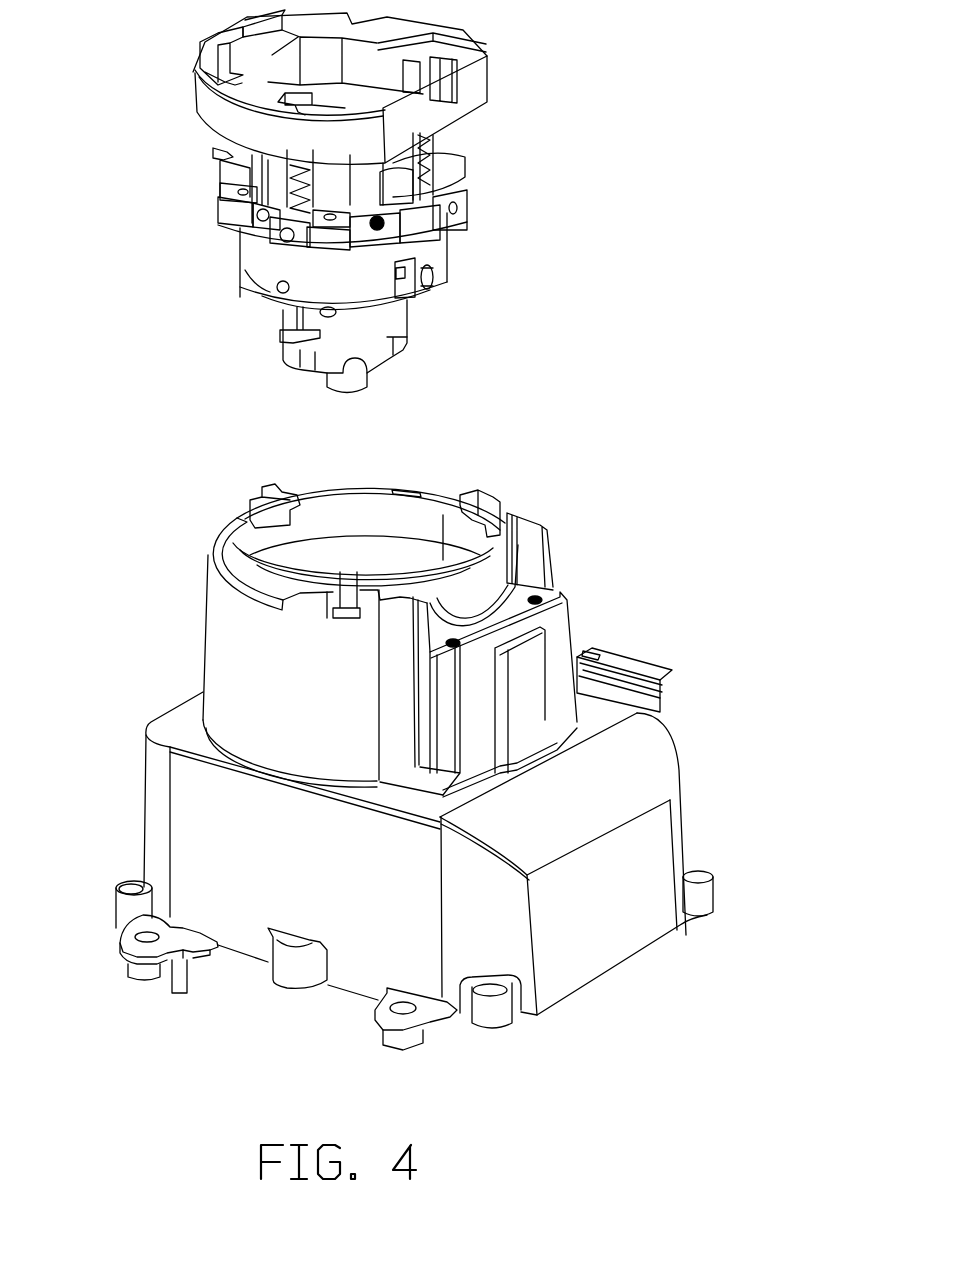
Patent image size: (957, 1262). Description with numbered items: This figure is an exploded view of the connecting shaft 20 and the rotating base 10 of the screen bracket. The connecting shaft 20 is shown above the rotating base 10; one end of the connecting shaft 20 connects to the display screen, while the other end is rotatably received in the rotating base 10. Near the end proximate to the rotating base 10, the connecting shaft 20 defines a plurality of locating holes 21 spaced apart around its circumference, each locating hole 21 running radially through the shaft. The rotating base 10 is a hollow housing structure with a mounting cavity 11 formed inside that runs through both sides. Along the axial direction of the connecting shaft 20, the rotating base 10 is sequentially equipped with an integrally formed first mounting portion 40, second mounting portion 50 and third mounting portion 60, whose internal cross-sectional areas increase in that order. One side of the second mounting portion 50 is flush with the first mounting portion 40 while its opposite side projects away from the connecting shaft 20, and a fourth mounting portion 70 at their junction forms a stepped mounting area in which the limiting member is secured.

The rotating base 10 is at (410, 736).
The mounting cavity 11 is at (340, 552).
The connecting shaft 20 is at (353, 201).
The locating hole 21 is at (433, 282).
The first mounting portion 40 is at (243, 550).
The second mounting portion 50 is at (560, 663).
The third mounting portion 60 is at (657, 837).
The fourth mounting portion 70 is at (527, 590).